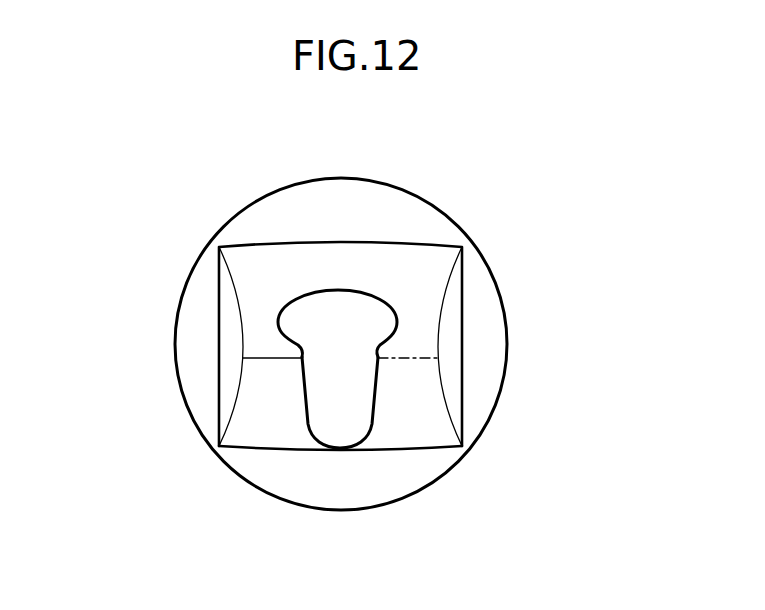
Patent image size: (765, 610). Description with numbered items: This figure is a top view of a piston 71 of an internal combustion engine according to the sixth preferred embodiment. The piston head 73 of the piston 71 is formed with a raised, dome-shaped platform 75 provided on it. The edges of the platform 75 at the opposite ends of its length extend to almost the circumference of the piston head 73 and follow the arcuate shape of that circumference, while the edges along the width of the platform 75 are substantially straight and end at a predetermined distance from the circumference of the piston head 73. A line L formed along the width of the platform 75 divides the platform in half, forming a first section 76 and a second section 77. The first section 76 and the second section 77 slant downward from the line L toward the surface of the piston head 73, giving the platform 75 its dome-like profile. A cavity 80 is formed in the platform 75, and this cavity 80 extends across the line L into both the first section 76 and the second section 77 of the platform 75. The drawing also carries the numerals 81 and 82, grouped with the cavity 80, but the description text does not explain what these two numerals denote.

The piston 71 is at (250, 485).
The piston head 73 is at (203, 298).
The platform 75 is at (200, 338).
The first section 76 is at (433, 283).
The second section 77 is at (433, 403).
The cavity 80 is at (241, 391).
The circular portion 81 is at (298, 320).
The slot portion 82 is at (320, 375).
The line L is at (420, 352).